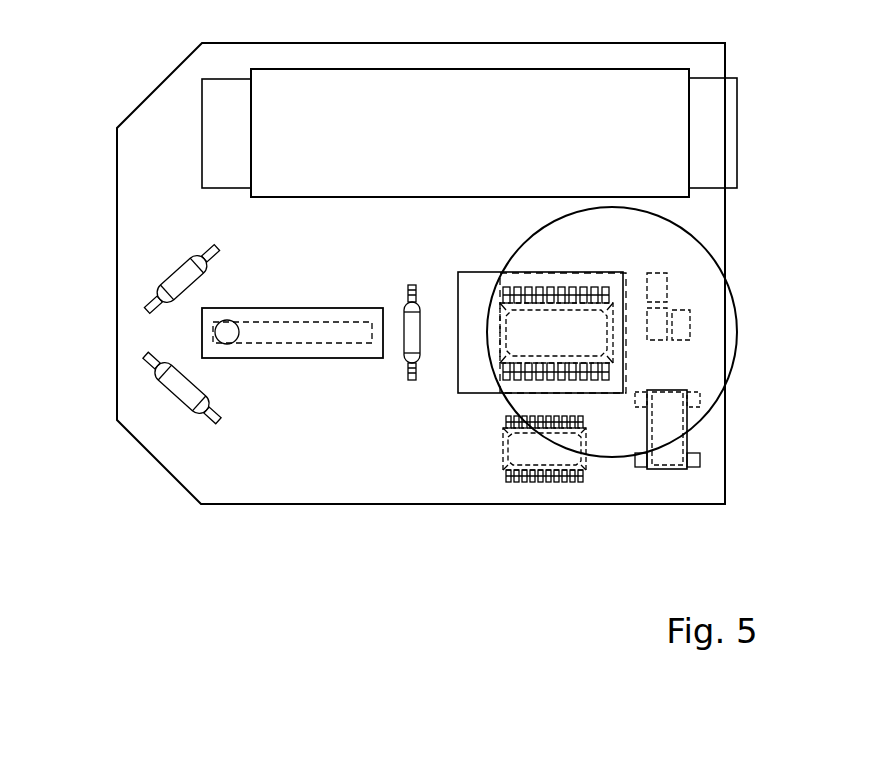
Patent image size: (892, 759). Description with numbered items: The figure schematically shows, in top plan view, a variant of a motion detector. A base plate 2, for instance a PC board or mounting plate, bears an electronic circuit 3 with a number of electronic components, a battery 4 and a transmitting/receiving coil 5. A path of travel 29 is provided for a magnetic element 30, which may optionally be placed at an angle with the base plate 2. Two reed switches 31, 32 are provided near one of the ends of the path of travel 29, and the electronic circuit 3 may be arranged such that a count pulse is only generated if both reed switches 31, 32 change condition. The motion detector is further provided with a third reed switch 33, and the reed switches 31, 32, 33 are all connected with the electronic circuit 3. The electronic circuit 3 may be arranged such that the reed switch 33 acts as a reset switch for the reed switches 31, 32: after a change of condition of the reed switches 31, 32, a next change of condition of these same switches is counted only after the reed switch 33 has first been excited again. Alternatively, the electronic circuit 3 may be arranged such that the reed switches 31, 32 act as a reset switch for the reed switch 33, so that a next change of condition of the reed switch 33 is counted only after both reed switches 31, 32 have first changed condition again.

The base plate 2 is at (368, 469).
The electronic circuit 3 is at (615, 353).
The battery 4 is at (706, 288).
The transmitting/receiving coil 5 is at (706, 158).
The path of travel 29 is at (293, 345).
The magnetic element 30 is at (227, 332).
The reed switch 31 is at (182, 388).
The reed switch 32 is at (182, 279).
The third reed switch 33 is at (412, 333).